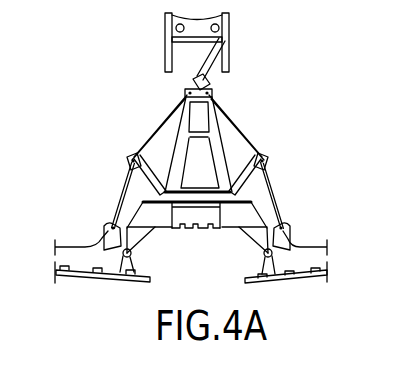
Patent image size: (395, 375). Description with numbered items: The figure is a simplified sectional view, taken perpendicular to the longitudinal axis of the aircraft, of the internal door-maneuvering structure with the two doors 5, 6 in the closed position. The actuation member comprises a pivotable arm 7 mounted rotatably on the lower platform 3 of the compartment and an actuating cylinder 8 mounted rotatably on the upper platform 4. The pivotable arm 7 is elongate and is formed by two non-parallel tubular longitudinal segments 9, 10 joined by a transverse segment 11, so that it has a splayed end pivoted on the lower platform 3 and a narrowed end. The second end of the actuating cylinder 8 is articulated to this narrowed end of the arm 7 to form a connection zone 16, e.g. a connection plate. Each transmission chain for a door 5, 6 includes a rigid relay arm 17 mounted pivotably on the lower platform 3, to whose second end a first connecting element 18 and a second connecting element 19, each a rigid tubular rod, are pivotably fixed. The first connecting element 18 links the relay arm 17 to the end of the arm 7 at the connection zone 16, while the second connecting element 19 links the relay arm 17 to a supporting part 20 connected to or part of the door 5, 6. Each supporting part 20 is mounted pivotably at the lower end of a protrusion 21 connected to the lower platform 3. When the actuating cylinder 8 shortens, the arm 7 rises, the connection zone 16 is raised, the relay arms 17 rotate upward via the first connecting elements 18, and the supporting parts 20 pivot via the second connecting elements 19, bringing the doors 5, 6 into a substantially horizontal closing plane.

The lower platform 3 is at (246, 208).
The upper platform 4 is at (231, 17).
The door 5 is at (87, 280).
The door 6 is at (288, 280).
The pivotable arm 7 is at (223, 148).
The actuating cylinder 8 is at (203, 62).
The longitudinal segment 9 is at (218, 162).
The longitudinal segment 10 is at (177, 147).
The transverse segment 11 is at (217, 104).
The connection zone 16 is at (209, 89).
The relay arm 17 is at (128, 168).
The first connecting element 18 is at (216, 124).
The second connecting element 19 is at (271, 182).
The supporting part 20 is at (101, 240).
The protrusion 21 is at (141, 241).